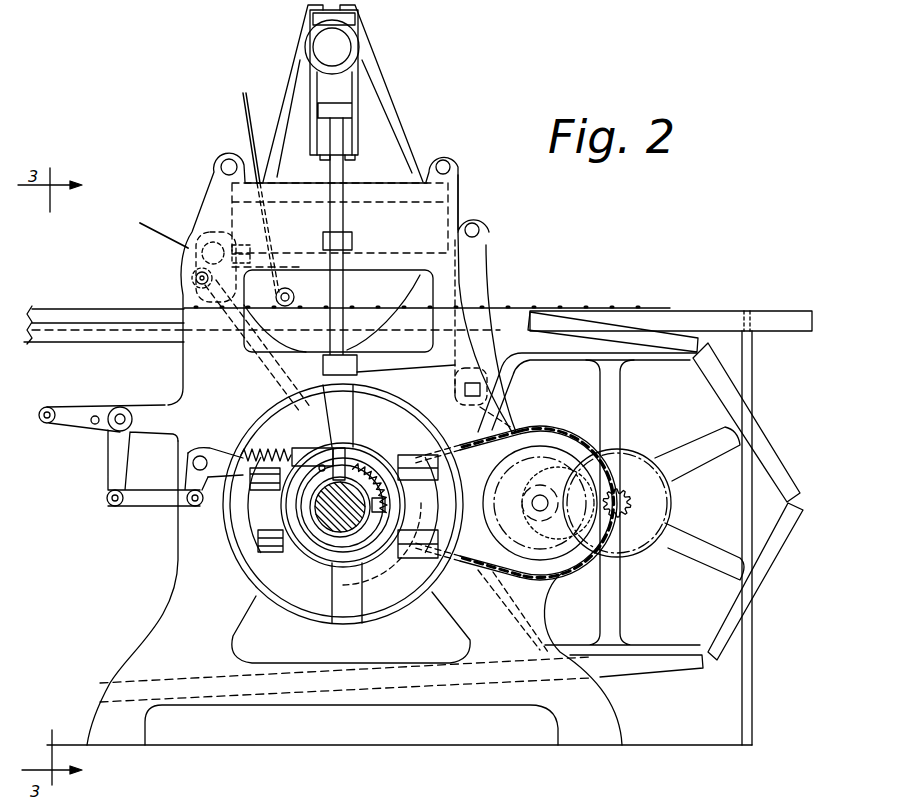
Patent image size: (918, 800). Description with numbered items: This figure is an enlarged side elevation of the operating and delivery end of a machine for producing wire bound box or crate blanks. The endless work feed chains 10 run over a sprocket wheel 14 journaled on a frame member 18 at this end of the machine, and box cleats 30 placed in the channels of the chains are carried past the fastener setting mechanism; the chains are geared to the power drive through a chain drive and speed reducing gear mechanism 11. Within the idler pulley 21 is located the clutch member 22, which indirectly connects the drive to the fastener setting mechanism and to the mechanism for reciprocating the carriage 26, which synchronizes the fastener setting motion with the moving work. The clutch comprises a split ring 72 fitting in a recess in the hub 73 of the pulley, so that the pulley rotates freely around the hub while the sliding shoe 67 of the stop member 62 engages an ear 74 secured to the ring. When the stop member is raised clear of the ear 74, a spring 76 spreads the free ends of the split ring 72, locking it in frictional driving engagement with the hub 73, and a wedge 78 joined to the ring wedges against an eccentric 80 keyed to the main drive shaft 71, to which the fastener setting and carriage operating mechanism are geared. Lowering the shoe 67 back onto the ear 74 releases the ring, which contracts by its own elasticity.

The endless work feed chains 10 is at (744, 420).
The chain drive and speed reducing gear mechanism 11 is at (650, 452).
The sprocket wheel 14 is at (760, 548).
The frame member 18 is at (178, 550).
The idler pulley 21 is at (235, 591).
The clutch member 22 is at (323, 552).
The carriage 26 is at (448, 184).
The box cleats 30 is at (628, 316).
The stop member 62 is at (297, 510).
The sliding shoe 67 is at (262, 452).
The main drive shaft 71 is at (398, 512).
The split ring 72 is at (367, 571).
The hub 73 is at (313, 552).
The ear 74 is at (348, 470).
The spring 76 is at (393, 470).
The wedge 78 is at (310, 498).
The eccentric 80 is at (410, 545).